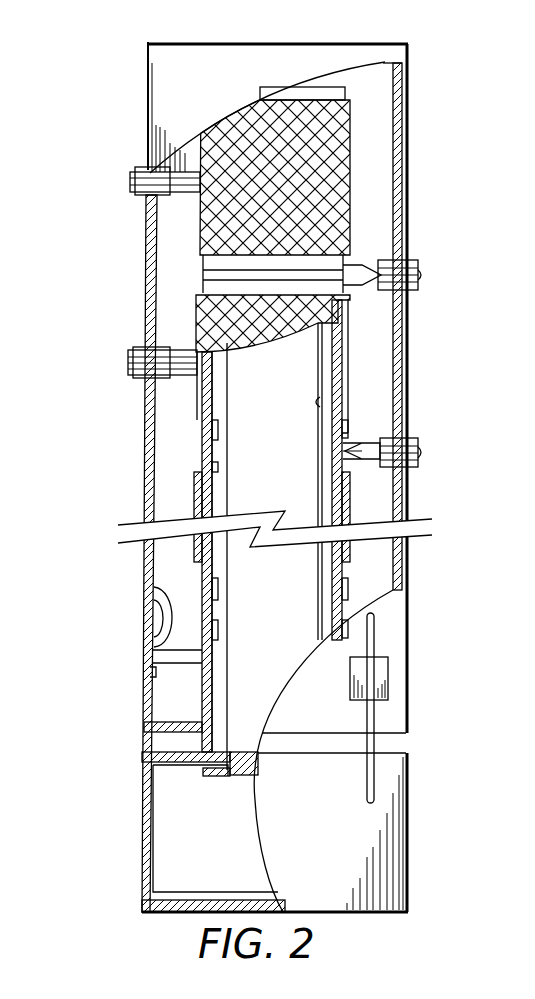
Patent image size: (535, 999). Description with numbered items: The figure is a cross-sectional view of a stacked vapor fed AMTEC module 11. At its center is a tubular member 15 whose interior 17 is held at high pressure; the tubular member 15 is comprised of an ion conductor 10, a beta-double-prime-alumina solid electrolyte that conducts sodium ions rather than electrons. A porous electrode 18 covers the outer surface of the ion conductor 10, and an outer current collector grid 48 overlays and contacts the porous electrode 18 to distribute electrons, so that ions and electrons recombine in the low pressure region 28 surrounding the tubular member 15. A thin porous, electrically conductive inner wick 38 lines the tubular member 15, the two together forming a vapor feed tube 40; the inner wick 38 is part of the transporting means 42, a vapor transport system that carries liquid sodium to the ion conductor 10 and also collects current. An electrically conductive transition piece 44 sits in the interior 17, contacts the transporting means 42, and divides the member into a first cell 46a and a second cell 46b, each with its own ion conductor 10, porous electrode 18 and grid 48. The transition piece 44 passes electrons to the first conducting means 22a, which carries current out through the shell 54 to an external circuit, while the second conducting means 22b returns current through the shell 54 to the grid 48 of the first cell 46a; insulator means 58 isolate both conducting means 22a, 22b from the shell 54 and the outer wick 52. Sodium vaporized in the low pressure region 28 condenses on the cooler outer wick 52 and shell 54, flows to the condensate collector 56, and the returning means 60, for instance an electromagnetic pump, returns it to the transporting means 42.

The ion conductor 10 is at (346, 340).
The stacked vapor fed AMTEC module 11 is at (88, 58).
The tubular member 15 is at (200, 415).
The interior 17 is at (278, 446).
The porous electrode 18 is at (347, 437).
The first conducting means 22a is at (370, 262).
The second conducting means 22b is at (135, 178).
The low pressure region 28 is at (396, 150).
The inner wick 38 is at (320, 401).
The vapor feed tube 40 is at (250, 680).
The transporting means 42 is at (323, 597).
The transition piece 44 is at (300, 278).
The first cell 46a is at (176, 212).
The second cell 46b is at (178, 329).
The outer current collector grid 48 is at (346, 301).
The outer wick 52 is at (403, 543).
The shell 54 is at (398, 605).
The condensate collector 56 is at (162, 616).
The insulator means 58 is at (392, 266).
The returning means 60 is at (374, 666).